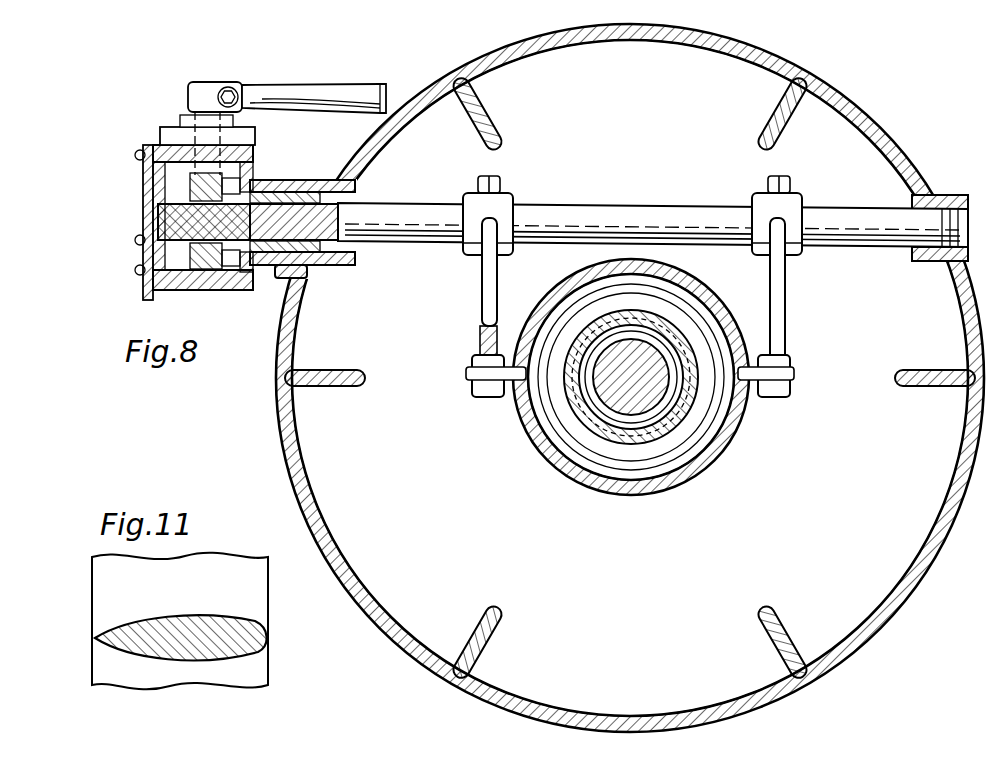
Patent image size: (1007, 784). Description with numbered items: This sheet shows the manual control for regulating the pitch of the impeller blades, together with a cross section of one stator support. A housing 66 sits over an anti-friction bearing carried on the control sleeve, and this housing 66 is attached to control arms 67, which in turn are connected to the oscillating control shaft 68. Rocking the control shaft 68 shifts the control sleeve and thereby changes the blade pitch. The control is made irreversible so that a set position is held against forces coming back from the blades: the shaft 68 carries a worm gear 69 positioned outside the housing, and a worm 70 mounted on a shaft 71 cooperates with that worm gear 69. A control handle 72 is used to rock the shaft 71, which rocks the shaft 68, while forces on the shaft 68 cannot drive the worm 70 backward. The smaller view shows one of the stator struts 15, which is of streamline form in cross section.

In FIG. 11, the strut 15 is at (157, 627).
In FIG. 8, the housing 66 is at (700, 475).
In FIG. 8, the control arm 67 is at (488, 299).
In FIG. 8, the control shaft 68 is at (596, 220).
In FIG. 8, the worm gear 69 is at (193, 278).
In FIG. 8, the worm 70 is at (158, 218).
In FIG. 8, the shaft 71 is at (214, 80).
In FIG. 8, the control handle 72 is at (303, 92).